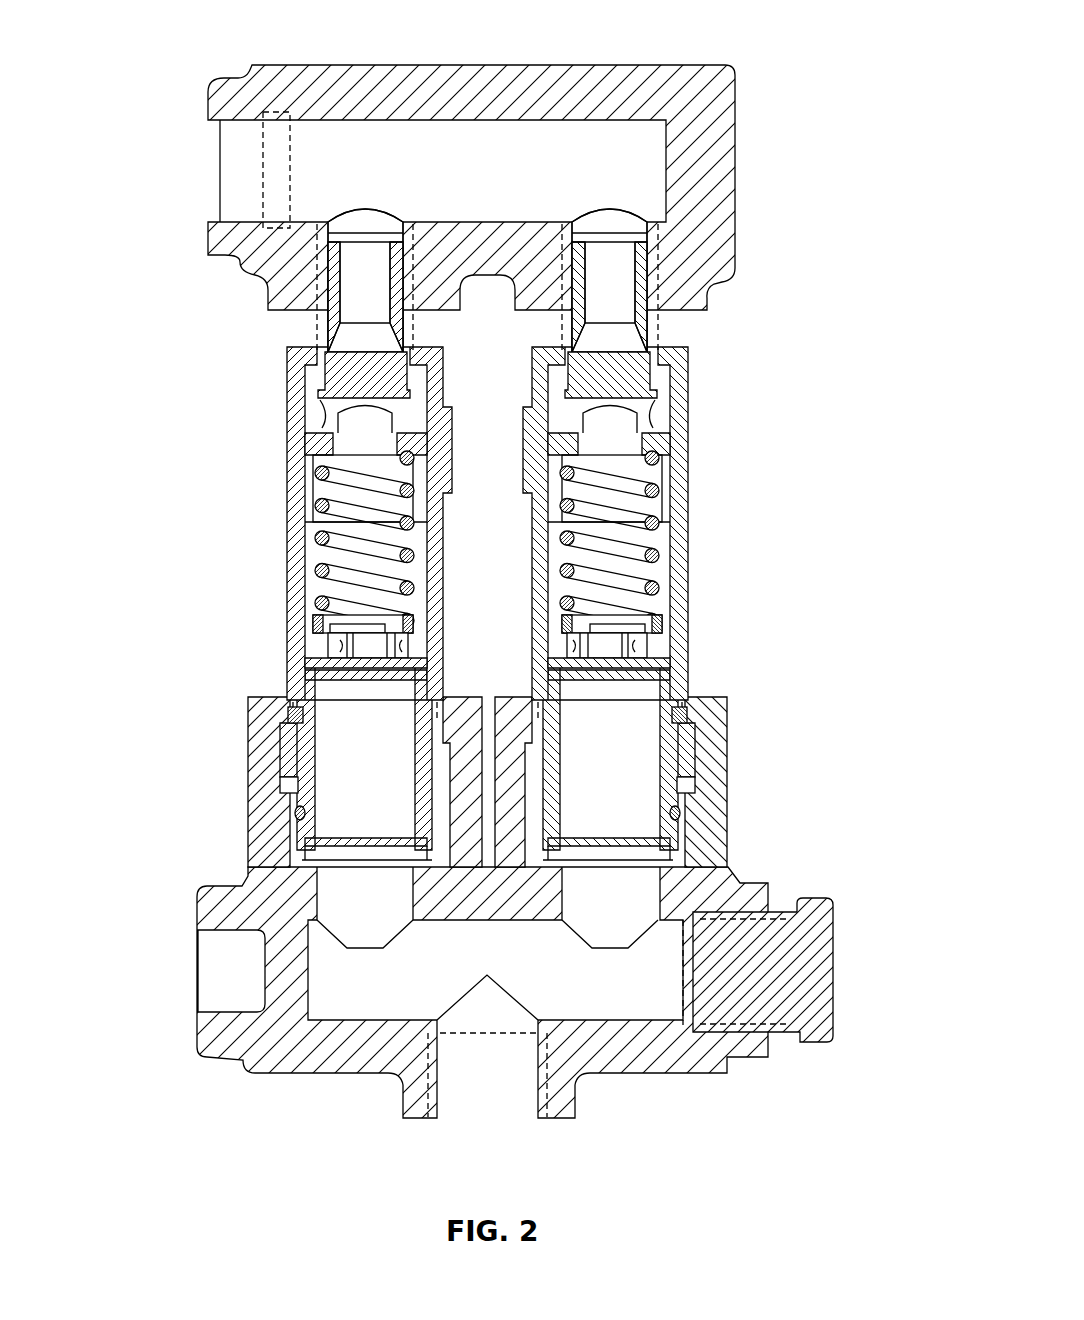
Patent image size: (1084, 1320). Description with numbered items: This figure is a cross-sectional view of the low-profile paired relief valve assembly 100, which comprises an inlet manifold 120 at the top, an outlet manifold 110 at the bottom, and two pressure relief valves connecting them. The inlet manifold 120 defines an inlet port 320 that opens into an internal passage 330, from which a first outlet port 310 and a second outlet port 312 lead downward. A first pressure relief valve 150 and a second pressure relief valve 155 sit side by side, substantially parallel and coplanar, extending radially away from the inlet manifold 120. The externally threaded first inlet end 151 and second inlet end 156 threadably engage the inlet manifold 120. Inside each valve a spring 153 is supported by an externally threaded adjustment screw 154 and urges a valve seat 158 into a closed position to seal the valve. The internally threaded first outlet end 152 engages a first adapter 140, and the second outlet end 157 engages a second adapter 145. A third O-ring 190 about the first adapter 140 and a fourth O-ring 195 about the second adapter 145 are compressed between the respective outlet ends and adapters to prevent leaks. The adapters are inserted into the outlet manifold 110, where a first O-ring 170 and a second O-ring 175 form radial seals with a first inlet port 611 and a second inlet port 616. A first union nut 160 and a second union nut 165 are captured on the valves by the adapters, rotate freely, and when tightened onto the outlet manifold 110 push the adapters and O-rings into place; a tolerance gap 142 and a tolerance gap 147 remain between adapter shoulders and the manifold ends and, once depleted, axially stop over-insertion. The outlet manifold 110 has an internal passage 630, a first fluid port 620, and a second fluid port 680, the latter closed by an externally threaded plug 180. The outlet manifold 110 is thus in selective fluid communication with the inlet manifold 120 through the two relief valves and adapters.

The low-profile paired relief valve assembly 100 is at (172, 40).
The outlet manifold 110 is at (740, 882).
The inlet manifold 120 is at (736, 140).
The first adapter 140 is at (297, 758).
The tolerance gap 142 is at (287, 787).
The second adapter 145 is at (690, 740).
The tolerance gap 147 is at (690, 787).
The first pressure relief valve 150 is at (296, 575).
The first inlet end 151 is at (318, 323).
The first outlet end 152 is at (298, 712).
The spring 153 is at (322, 505).
The externally threaded adjustment screw 154 is at (318, 632).
The second pressure relief valve 155 is at (690, 545).
The second inlet end 156 is at (657, 323).
The second outlet end 157 is at (676, 690).
The valve seat 158 is at (345, 372).
The first union nut 160 is at (248, 777).
The second union nut 165 is at (728, 777).
The first O-ring 170 is at (282, 818).
The second O-ring 175 is at (690, 818).
The plug 180 is at (835, 975).
The third O-ring 190 is at (297, 735).
The fourth O-ring 195 is at (686, 715).
The first outlet port 310 is at (372, 226).
The second outlet port 312 is at (613, 226).
The inlet port 320 is at (243, 170).
The internal passage 330 is at (478, 172).
The first inlet port 611 is at (362, 845).
The second inlet port 616 is at (622, 855).
The first fluid port 620 is at (490, 1075).
The internal passage 630 is at (387, 985).
The second fluid port 680 is at (672, 967).